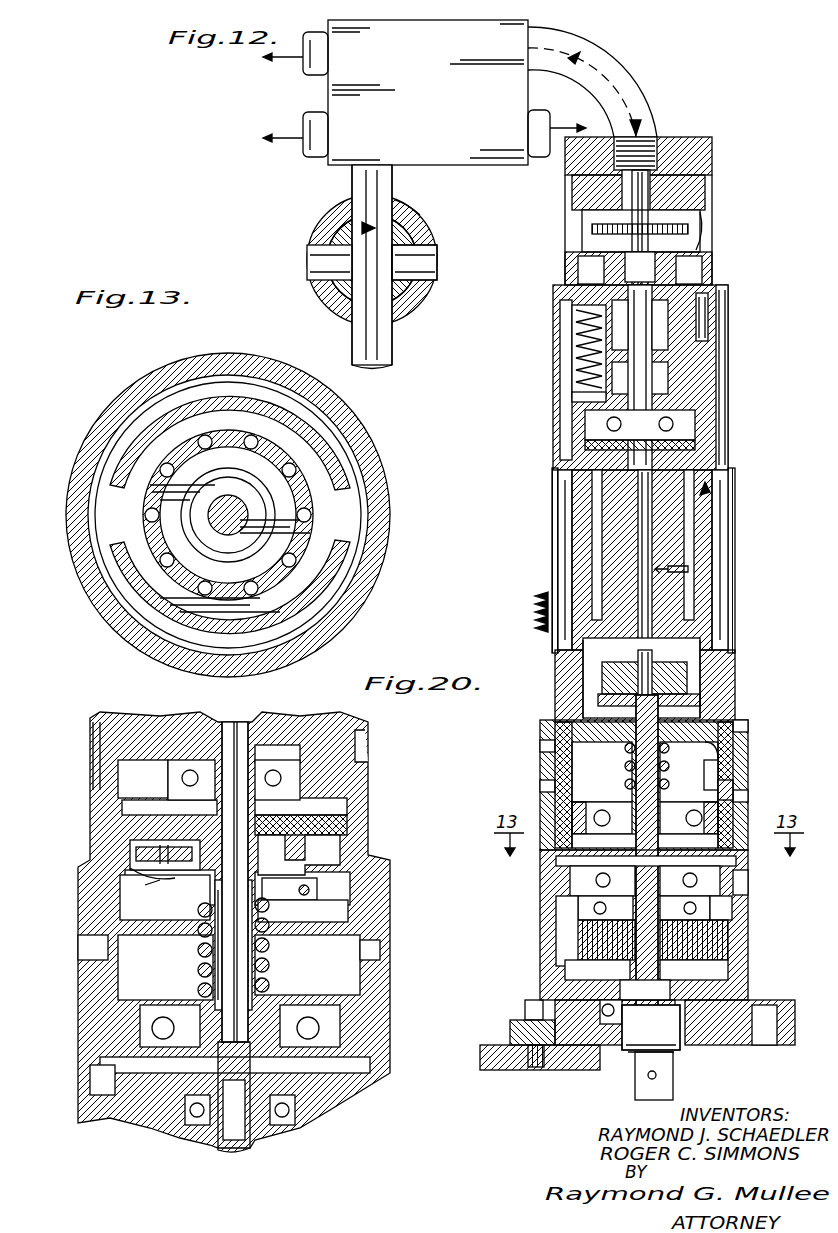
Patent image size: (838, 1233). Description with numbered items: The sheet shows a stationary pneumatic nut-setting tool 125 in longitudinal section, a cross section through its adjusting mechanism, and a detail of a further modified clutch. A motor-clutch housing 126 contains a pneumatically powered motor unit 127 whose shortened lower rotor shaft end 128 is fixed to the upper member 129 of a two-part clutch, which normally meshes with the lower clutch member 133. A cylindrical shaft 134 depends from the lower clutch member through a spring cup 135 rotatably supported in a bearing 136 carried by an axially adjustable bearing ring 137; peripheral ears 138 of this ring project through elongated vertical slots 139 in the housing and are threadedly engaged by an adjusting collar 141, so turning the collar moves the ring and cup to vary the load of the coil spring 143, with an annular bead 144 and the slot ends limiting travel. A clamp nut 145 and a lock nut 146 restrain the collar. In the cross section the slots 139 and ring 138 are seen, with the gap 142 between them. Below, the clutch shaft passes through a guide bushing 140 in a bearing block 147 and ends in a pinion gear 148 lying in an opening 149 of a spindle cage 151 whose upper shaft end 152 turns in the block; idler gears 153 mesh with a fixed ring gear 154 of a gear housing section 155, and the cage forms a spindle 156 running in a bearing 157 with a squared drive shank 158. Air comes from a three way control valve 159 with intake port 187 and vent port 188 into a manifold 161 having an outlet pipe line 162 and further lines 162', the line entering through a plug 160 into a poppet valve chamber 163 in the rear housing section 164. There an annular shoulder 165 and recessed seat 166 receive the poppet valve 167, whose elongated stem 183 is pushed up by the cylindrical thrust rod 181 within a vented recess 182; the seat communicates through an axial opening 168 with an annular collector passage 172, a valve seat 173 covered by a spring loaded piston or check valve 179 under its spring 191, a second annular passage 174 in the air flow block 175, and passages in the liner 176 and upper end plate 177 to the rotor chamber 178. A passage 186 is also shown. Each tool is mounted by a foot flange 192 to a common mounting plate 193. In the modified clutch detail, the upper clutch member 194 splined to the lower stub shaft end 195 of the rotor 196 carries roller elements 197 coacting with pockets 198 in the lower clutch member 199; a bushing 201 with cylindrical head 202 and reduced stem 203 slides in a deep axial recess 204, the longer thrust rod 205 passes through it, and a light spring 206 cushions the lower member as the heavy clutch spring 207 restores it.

In FIG. 12, the stationary tool 125 is at (739, 163).
In FIG. 12, the motor-clutch housing 126 is at (740, 690).
In FIG. 13, the motor-clutch housing 126 is at (352, 570).
In FIG. 12, the pneumatically powered motor unit 127 is at (735, 535).
In FIG. 12, the lower rotor shaft end 128 is at (690, 668).
In FIG. 12, the upper member of two-part clutch 129 is at (605, 668).
In FIG. 12, the lower clutch member 133 is at (748, 722).
In FIG. 12, the cylindrical shaft 134 is at (688, 772).
In FIG. 12, the spring cup 135 is at (718, 775).
In FIG. 12, the bearing 136 is at (733, 792).
In FIG. 12, the bearing ring 137 is at (582, 800).
In FIG. 13, the bearing ring 137 is at (132, 586).
In FIG. 12, the peripheral ears 138 is at (572, 798).
In FIG. 13, the peripheral ears 138 is at (355, 468).
In FIG. 12, the elongated vertical slots 139 is at (578, 775).
In FIG. 13, the elongated vertical slots 139 is at (98, 496).
In FIG. 12, the guide bushing 140 is at (646, 877).
In FIG. 12, the adjusting collar 141 is at (742, 812).
In FIG. 13, the adjusting collar 141 is at (140, 365).
In FIG. 13, the inner ring 142 is at (96, 510).
In FIG. 12, the coil spring 143 is at (603, 772).
In FIG. 12, the annular bead 144 is at (556, 870).
In FIG. 12, the clamp nut 145 is at (556, 920).
In FIG. 12, the lock nut 146 is at (545, 720).
In FIG. 12, the bearing block 147 is at (742, 885).
In FIG. 12, the pinion gear 148 is at (728, 934).
In FIG. 12, the opening 149 is at (725, 962).
In FIG. 12, the reduction gearing spindle cage 151 is at (700, 990).
In FIG. 12, the upper open shaft end 152 is at (600, 902).
In FIG. 12, the idler gears 153 is at (730, 916).
In FIG. 12, the fixed ring gear 154 is at (565, 966).
In FIG. 12, the gear housing section 155 is at (605, 1040).
In FIG. 12, the spindle 156 is at (668, 1035).
In FIG. 12, the bearing 157 is at (716, 1010).
In FIG. 12, the squared drive shank 158 is at (672, 1100).
In FIG. 12, the three way control valve 159 is at (340, 240).
In FIG. 12, the plug 160 is at (700, 137).
In FIG. 12, the manifold 161 is at (436, 72).
In FIG. 12, the outlet pipe line 162 is at (611, 82).
In FIG. 12, the outlet pipe lines 162' is at (289, 94).
In FIG. 12, the poppet valve chamber 163 is at (690, 228).
In FIG. 12, the rear housing section 164 is at (570, 198).
In FIG. 12, the annular shoulder 165 is at (692, 240).
In FIG. 12, the recessed seat 166 is at (578, 266).
In FIG. 12, the poppet valve 167 is at (700, 215).
In FIG. 12, the axial opening 168 is at (700, 272).
In FIG. 12, the annular collector passage 172 is at (565, 282).
In FIG. 12, the valve seat 173 is at (560, 322).
In FIG. 12, the second annular passage 174 is at (690, 336).
In FIG. 12, the air flow block 175 is at (722, 392).
In FIG. 12, the liner 176 is at (565, 496).
In FIG. 12, the upper end plate 177 is at (700, 440).
In FIG. 12, the rotor chamber 178 is at (568, 522).
In FIG. 12, the spring loaded piston or check valve 179 is at (575, 350).
In FIG. 12, the cylindrical thrust rod 181 is at (660, 550).
In FIG. 12, the vented recess 182 is at (665, 376).
In FIG. 12, the elongated cylindrical stem 183 is at (708, 320).
In FIG. 12, the passage 186 is at (720, 750).
In FIG. 12, the intake port 187 is at (395, 200).
In FIG. 12, the vent port 188 is at (428, 258).
In FIG. 12, the spring 191 is at (585, 378).
In FIG. 12, the foot flange 192 is at (510, 1028).
In FIG. 12, the common mounting plate 193 is at (507, 1068).
In FIG. 20, the upper clutch member 194 is at (345, 822).
In FIG. 20, the lower stub shaft end 195 is at (200, 812).
In FIG. 20, the rotor 196 is at (205, 722).
In FIG. 20, the roller elements 197 is at (160, 838).
In FIG. 20, the pockets 198 is at (150, 880).
In FIG. 20, the lower clutch member 199 is at (145, 932).
In FIG. 20, the bushing 201 is at (303, 900).
In FIG. 20, the cylindrical head 202 is at (265, 846).
In FIG. 20, the cylindrical reduced stem 203 is at (270, 946).
In FIG. 20, the deep axial recess 204 is at (252, 976).
In FIG. 20, the thrust rod 205 is at (200, 980).
In FIG. 20, the light spring 206 is at (236, 937).
In FIG. 20, the heavy clutch spring 207 is at (214, 962).